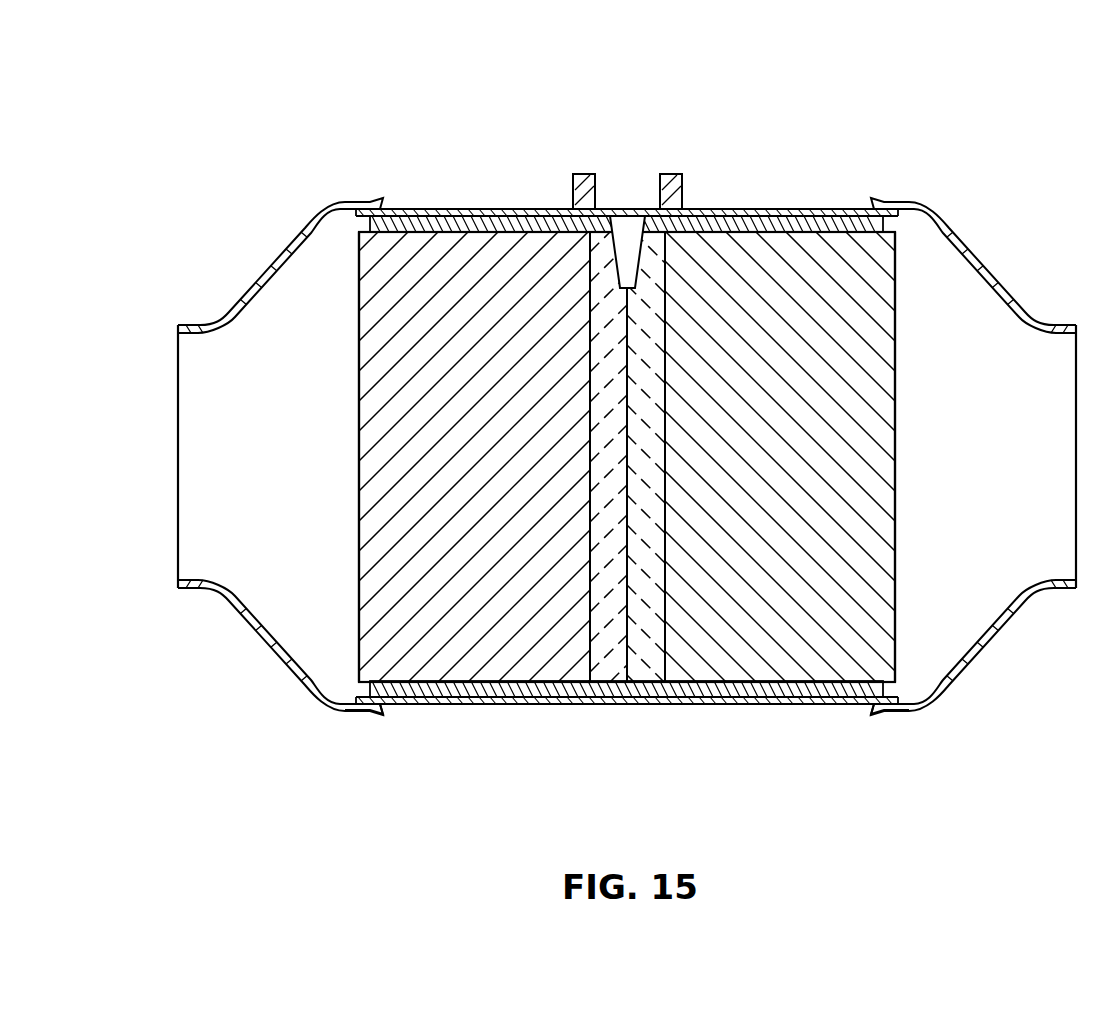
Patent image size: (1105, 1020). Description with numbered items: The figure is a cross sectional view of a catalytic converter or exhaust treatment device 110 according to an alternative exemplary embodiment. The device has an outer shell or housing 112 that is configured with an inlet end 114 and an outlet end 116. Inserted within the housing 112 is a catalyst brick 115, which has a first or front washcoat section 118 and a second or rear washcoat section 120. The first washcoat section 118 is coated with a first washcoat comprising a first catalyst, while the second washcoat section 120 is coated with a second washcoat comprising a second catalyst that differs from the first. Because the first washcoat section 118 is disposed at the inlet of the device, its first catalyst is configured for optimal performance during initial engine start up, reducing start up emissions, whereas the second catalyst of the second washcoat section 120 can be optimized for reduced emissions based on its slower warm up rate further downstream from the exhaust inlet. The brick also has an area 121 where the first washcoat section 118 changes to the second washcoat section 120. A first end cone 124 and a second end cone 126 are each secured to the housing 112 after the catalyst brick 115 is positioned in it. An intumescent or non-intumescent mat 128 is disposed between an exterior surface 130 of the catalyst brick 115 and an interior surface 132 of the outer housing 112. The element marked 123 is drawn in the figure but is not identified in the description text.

The exhaust treatment device 110 is at (785, 117).
The housing 112 is at (800, 208).
The inlet end 114 is at (365, 700).
The catalyst brick 115 is at (422, 563).
The outlet end 116 is at (895, 700).
The first washcoat section 118 is at (343, 317).
The second washcoat section 120 is at (909, 311).
The area 121 is at (603, 292).
The protrusion 123 is at (661, 188).
The first end cone 124 is at (272, 660).
The second end cone 126 is at (978, 657).
The mat 128 is at (455, 220).
The exterior surface 130 is at (478, 688).
The interior surface 132 is at (535, 702).